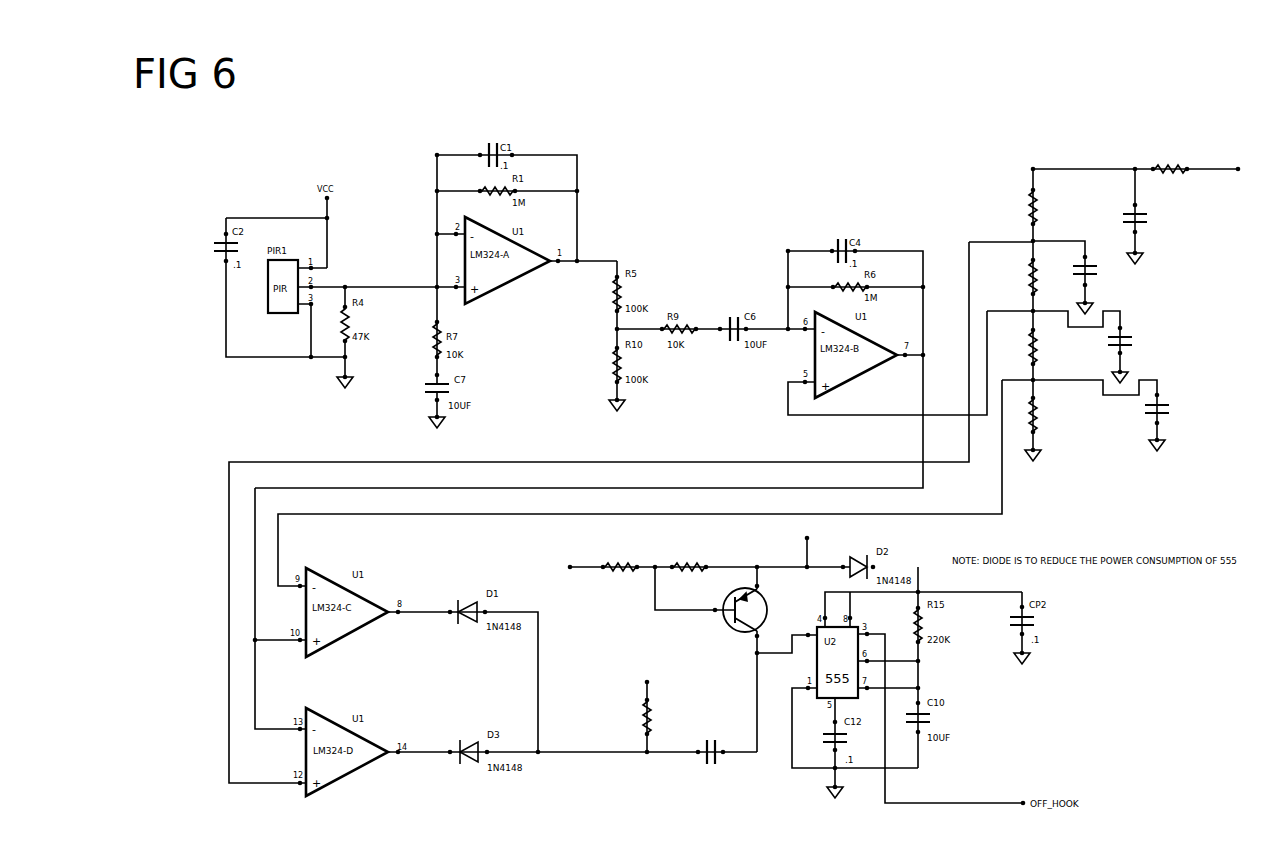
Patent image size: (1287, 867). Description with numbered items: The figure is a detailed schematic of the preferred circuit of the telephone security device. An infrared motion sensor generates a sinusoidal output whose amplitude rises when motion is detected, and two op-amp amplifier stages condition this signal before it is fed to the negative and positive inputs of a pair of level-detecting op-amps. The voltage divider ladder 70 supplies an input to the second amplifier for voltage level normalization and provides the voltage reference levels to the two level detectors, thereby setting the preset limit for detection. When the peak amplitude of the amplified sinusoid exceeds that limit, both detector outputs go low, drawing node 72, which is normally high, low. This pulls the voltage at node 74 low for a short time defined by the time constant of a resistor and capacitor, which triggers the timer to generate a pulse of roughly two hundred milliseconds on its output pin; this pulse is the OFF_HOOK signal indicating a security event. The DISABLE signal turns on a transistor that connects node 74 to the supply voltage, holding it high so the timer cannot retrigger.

The voltage divider ladder 70 is at (1092, 149).
The node 72 is at (647, 757).
The node 74 is at (757, 653).